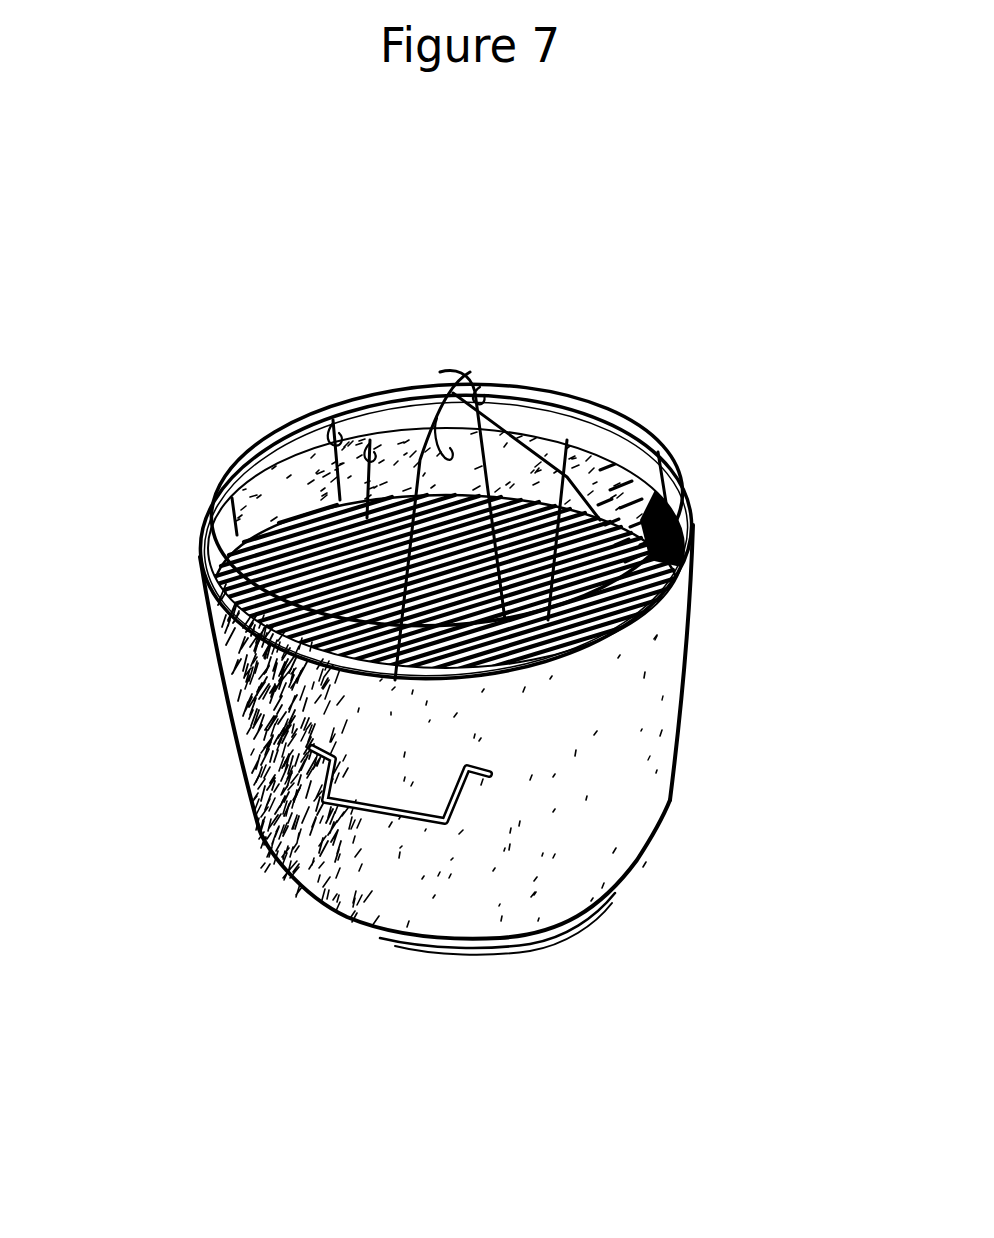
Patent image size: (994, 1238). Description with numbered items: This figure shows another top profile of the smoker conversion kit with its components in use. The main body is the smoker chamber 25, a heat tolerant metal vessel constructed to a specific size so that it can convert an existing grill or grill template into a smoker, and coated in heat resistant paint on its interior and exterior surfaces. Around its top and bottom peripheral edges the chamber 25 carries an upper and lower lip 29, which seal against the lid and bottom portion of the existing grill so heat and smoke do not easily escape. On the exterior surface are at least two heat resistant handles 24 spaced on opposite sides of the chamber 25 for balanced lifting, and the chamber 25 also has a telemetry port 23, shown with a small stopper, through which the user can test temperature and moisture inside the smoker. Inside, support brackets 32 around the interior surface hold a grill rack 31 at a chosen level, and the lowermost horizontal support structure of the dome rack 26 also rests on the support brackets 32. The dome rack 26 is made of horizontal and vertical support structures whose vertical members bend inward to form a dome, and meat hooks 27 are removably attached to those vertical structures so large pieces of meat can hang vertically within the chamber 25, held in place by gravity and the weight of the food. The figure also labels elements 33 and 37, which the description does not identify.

The telemetry port 23 is at (727, 690).
The heat resistant handles 24 is at (300, 888).
The smoker chamber 25 is at (227, 730).
The dome rack 26 is at (613, 418).
The meat hooks 27 is at (370, 443).
The upper and lower lip 29 is at (392, 937).
The grill rack 31 is at (687, 587).
The support brackets 32 is at (560, 470).
The inner lip 33 is at (227, 618).
The outer wall surface 37 is at (650, 680).